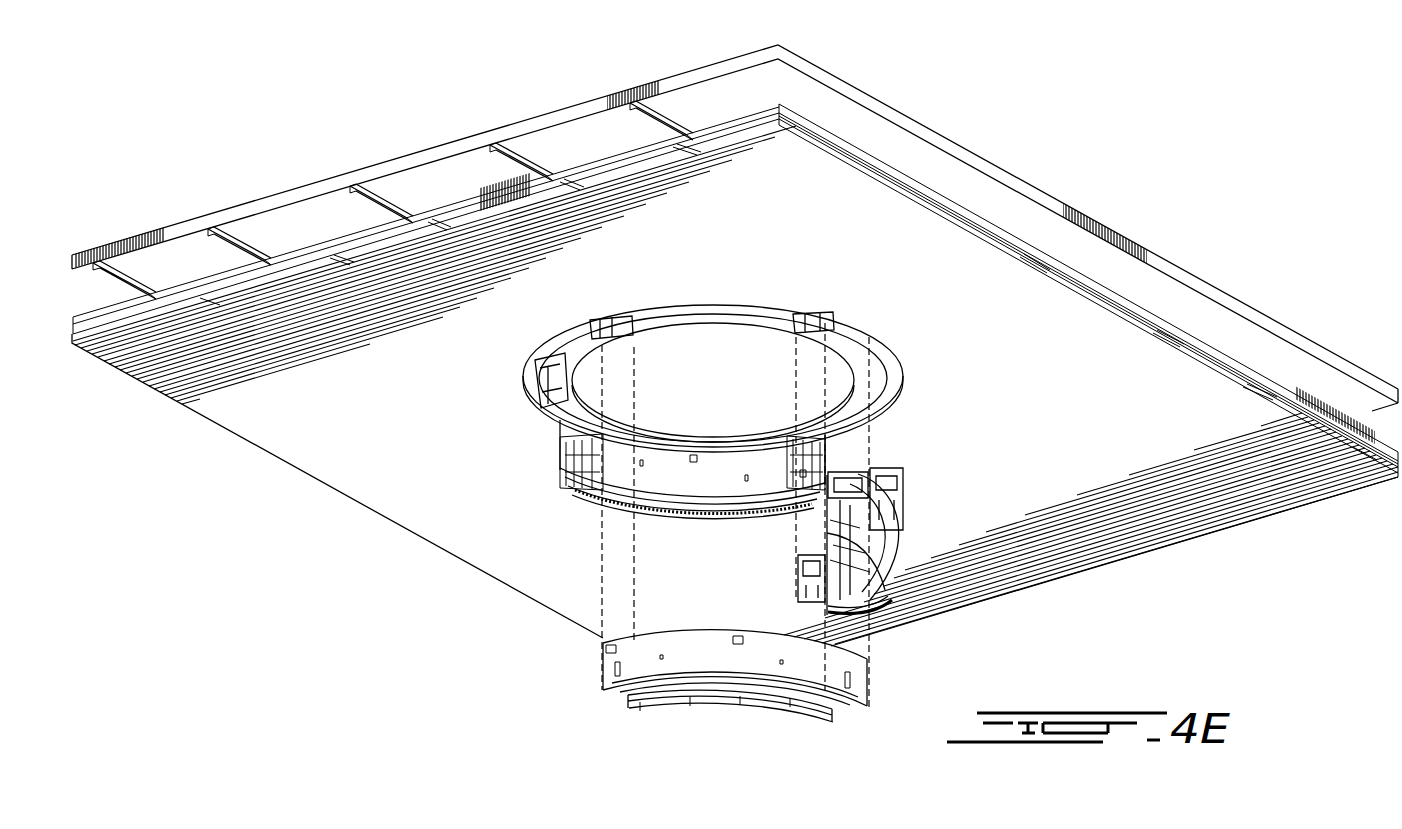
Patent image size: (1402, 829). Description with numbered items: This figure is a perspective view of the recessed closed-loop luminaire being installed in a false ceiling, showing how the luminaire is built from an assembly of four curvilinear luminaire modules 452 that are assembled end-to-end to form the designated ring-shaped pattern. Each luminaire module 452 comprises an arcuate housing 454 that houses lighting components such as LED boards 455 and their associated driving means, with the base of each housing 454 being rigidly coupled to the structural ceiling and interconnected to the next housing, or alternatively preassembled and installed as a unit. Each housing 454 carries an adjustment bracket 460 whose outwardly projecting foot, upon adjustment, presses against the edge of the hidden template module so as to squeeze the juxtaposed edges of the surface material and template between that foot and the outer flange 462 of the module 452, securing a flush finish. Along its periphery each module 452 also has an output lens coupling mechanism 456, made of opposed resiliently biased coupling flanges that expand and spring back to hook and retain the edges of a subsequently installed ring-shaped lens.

The curvilinear luminaire module 452 is at (903, 530).
The arcuate housing 454 is at (725, 470).
The LED boards 455 is at (542, 385).
The output lens coupling mechanism 456 is at (622, 330).
The adjustment bracket 460 is at (896, 510).
The outer flange 462 is at (560, 343).